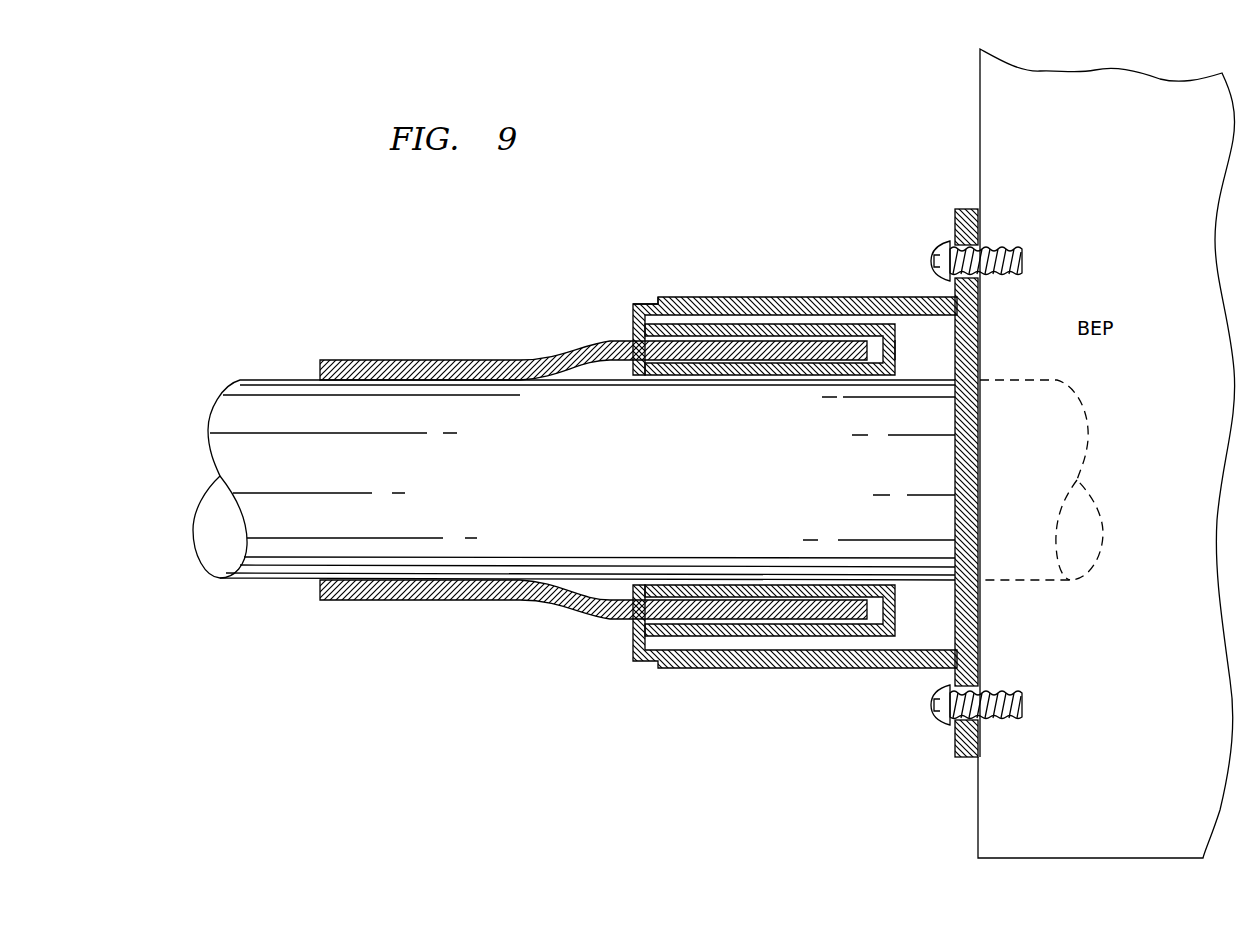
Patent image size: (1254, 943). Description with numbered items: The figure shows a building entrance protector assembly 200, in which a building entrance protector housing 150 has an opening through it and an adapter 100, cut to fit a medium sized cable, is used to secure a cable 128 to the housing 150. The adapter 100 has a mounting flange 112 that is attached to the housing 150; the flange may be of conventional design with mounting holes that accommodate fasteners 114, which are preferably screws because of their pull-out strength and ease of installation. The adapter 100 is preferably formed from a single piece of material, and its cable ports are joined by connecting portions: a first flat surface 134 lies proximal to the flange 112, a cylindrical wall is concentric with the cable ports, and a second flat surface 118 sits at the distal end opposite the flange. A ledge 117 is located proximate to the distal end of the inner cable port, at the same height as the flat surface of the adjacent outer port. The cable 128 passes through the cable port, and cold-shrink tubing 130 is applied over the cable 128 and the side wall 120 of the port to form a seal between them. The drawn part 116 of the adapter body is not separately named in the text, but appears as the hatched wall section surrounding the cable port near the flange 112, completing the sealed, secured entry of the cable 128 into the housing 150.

The adapter 100 is at (705, 688).
The mounting flange 112 is at (955, 213).
The fasteners 114 is at (938, 248).
The outer housing band 116 is at (815, 297).
The ledge 117 is at (658, 297).
The second flat surface 118 is at (633, 310).
The side wall 120 is at (823, 381).
The cable 128 is at (272, 378).
The cold-shrink tubing 130 is at (432, 360).
The first flat surface 134 is at (897, 353).
The building entrance protector housing 150 is at (980, 86).
The building entrance protector assembly 200 is at (468, 200).